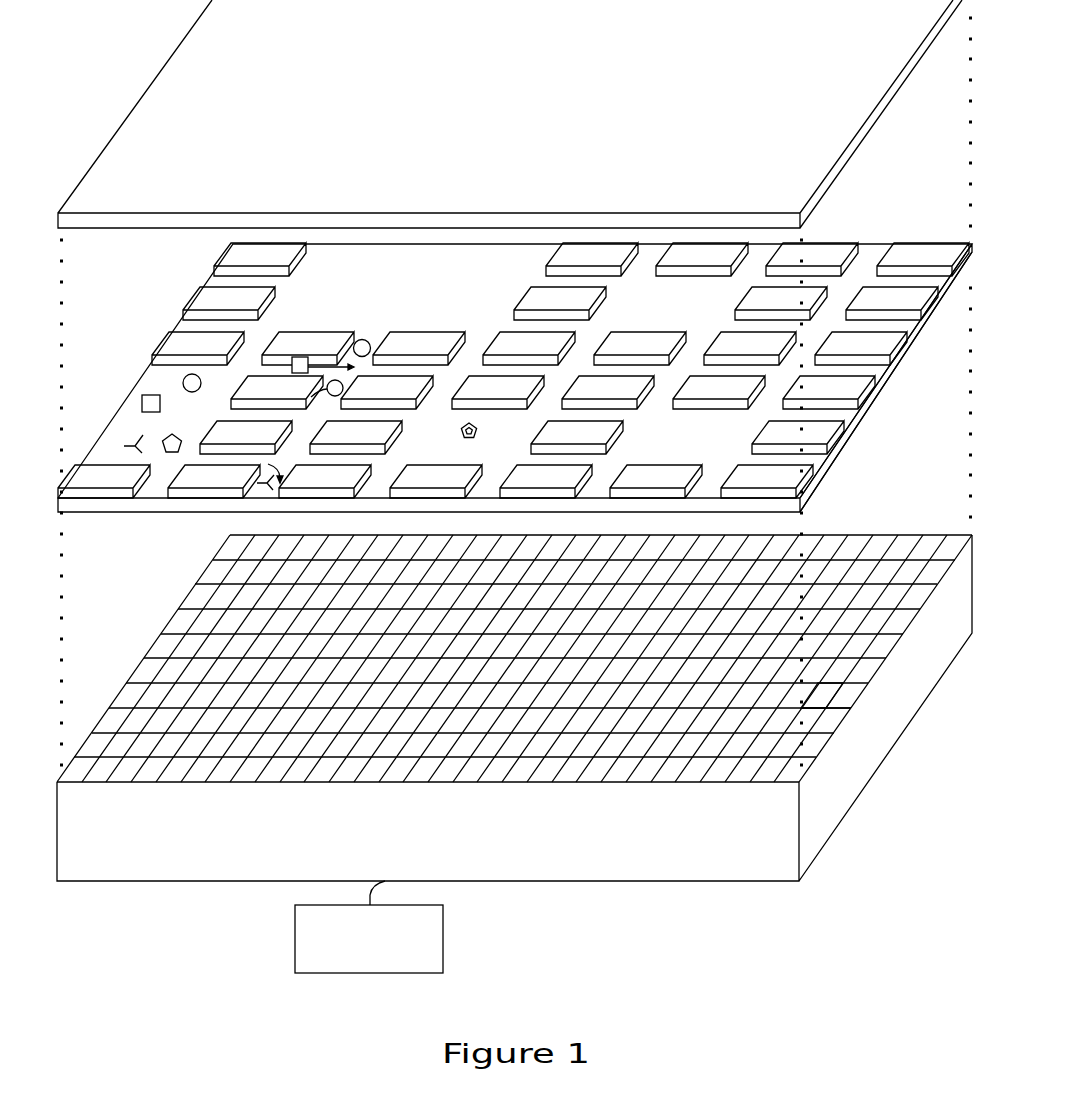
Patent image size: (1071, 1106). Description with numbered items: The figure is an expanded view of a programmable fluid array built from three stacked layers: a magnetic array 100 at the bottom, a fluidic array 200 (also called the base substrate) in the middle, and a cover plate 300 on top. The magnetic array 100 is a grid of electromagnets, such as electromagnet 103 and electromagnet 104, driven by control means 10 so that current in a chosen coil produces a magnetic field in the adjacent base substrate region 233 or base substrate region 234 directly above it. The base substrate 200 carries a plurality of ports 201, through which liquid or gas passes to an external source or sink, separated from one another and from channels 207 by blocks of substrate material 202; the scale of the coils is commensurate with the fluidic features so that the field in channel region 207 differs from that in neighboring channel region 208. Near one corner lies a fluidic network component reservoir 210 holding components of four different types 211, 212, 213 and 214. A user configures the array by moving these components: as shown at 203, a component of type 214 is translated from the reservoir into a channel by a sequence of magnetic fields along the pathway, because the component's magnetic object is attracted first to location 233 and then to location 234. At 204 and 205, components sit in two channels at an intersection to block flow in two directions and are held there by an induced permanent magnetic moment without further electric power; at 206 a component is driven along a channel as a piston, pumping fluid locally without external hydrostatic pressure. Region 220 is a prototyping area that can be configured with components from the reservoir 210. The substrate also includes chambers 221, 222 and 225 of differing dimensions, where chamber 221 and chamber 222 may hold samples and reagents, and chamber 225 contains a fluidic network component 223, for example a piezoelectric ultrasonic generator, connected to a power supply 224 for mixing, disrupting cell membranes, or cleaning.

The control means 10 is at (295, 940).
The magnetic array 100 is at (695, 881).
The electromagnet 103 is at (833, 718).
The electromagnet 104 is at (815, 712).
The fluidic array 200 is at (810, 495).
The port 201 is at (373, 490).
The block of substrate material 202 is at (432, 492).
The translated fluidic network component 203 is at (263, 490).
The fluidic network component 204 is at (365, 340).
The fluidic network component 205 is at (293, 402).
The piston fluidic network component 206 is at (292, 366).
The channel 207 is at (528, 325).
The neighboring channel region 208 is at (553, 283).
The fluidic network component reservoir 210 is at (135, 388).
The fluidic network component type 211 is at (183, 382).
The fluidic network component type 212 is at (152, 395).
The fluidic network component type 213 is at (165, 436).
The fluidic network component type 214 is at (102, 430).
The prototyping region 220 is at (418, 288).
The chamber 221 is at (728, 318).
The chamber 222 is at (685, 443).
The fluidic network component 223 is at (469, 439).
The power supply 224 is at (461, 434).
The chamber 225 is at (463, 438).
The base substrate region 233 is at (813, 458).
The base substrate region 234 is at (750, 460).
The cover plate 300 is at (880, 113).